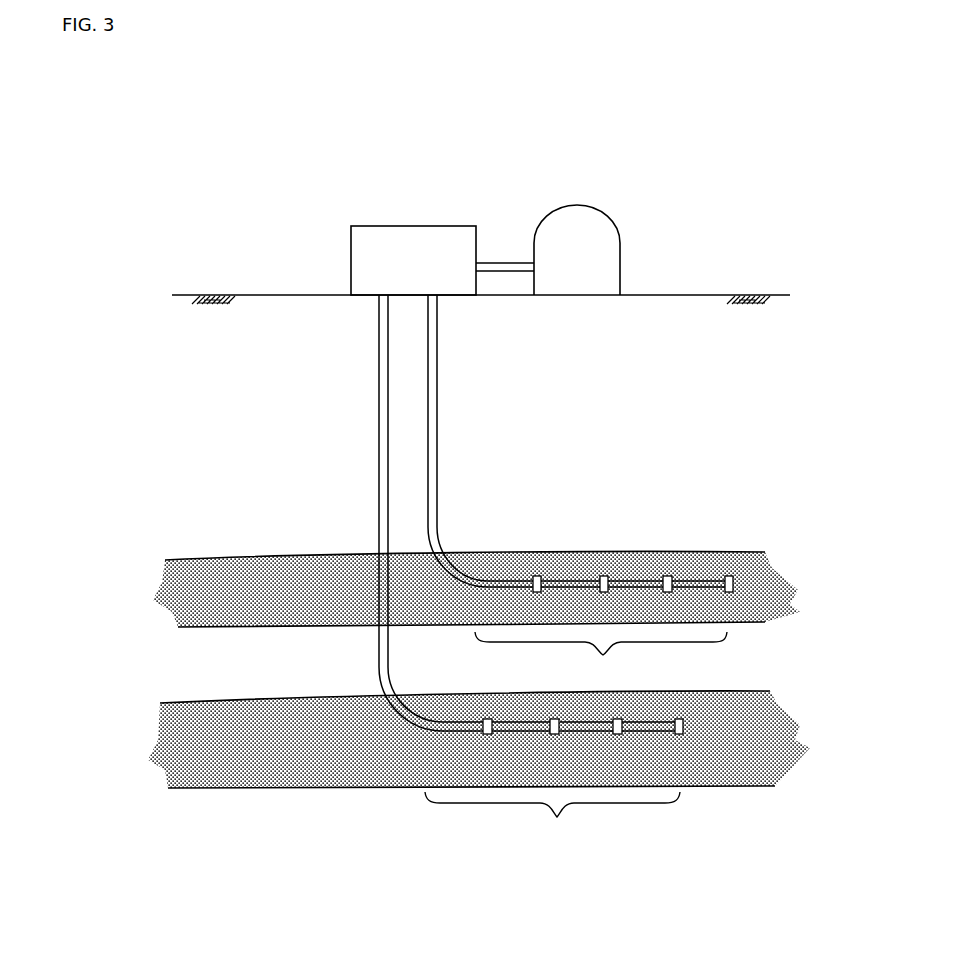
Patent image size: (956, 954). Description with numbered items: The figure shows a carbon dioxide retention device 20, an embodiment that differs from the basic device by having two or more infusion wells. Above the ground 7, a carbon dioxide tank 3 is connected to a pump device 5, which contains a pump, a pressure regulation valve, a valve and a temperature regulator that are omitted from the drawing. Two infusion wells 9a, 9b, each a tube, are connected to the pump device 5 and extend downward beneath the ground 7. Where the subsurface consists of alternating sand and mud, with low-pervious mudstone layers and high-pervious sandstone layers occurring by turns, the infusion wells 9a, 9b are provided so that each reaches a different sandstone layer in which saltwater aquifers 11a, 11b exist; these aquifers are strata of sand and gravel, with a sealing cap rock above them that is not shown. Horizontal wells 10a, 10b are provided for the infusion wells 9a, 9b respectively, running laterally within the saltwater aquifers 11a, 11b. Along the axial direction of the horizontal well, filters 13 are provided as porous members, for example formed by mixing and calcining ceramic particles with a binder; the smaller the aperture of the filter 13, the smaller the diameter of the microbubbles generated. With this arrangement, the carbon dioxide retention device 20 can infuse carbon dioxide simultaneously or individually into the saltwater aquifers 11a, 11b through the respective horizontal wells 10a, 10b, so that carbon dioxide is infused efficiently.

The carbon dioxide tank 3 is at (607, 243).
The pump device 5 is at (385, 232).
The ground 7 is at (273, 294).
The infusion well 9a is at (385, 443).
The infusion well 9b is at (432, 407).
The horizontal well 10a is at (557, 817).
The horizontal well 10b is at (603, 655).
The saltwater aquifer 11a is at (335, 770).
The saltwater aquifer 11b is at (305, 567).
The filter 13 is at (533, 565).
The carbon dioxide retention device 20 is at (515, 185).